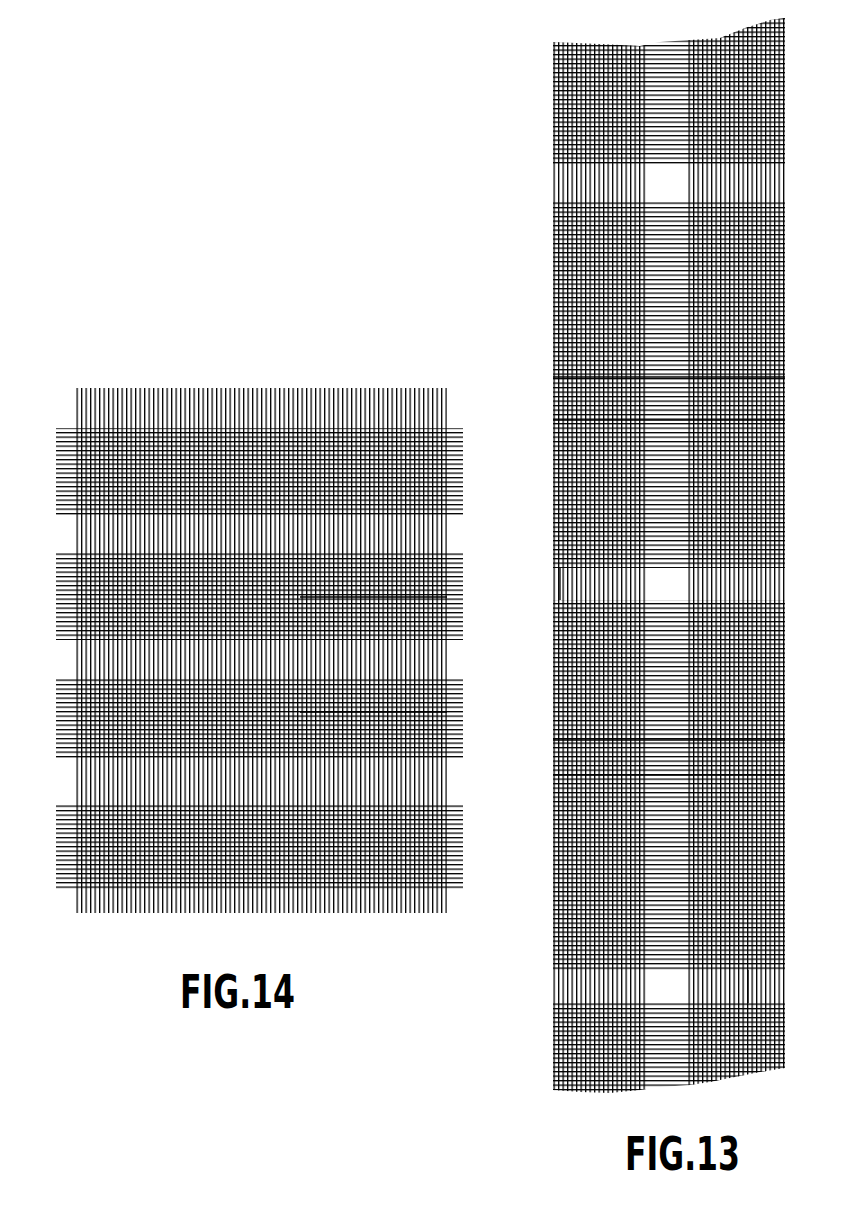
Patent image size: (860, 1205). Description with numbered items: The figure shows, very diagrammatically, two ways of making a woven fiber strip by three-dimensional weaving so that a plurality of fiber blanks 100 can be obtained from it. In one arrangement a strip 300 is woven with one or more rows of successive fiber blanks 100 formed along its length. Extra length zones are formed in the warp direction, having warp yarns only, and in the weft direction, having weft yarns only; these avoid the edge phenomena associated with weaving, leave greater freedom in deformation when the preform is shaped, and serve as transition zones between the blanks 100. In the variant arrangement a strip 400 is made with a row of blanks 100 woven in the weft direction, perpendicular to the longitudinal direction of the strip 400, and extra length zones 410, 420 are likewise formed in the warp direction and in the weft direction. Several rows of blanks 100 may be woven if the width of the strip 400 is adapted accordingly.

In FIG. 14, the fiber blank 100 is at (315, 597).
In FIG. 13, the fiber blank 100 is at (733, 377).
In FIG. 13, the strip 300 is at (649, 555).
In FIG. 14, the strip 400 is at (266, 610).
In FIG. 14, the extra length zone 410 is at (383, 532).
In FIG. 14, the extra length zone 420 is at (68, 597).